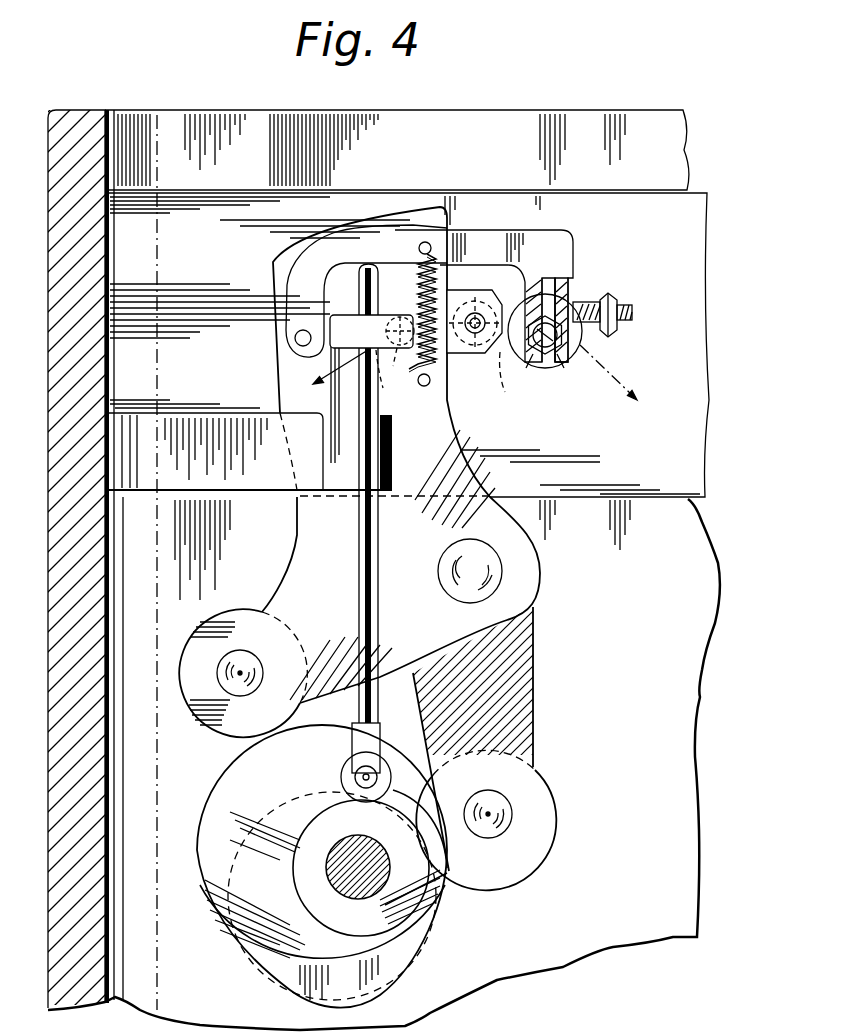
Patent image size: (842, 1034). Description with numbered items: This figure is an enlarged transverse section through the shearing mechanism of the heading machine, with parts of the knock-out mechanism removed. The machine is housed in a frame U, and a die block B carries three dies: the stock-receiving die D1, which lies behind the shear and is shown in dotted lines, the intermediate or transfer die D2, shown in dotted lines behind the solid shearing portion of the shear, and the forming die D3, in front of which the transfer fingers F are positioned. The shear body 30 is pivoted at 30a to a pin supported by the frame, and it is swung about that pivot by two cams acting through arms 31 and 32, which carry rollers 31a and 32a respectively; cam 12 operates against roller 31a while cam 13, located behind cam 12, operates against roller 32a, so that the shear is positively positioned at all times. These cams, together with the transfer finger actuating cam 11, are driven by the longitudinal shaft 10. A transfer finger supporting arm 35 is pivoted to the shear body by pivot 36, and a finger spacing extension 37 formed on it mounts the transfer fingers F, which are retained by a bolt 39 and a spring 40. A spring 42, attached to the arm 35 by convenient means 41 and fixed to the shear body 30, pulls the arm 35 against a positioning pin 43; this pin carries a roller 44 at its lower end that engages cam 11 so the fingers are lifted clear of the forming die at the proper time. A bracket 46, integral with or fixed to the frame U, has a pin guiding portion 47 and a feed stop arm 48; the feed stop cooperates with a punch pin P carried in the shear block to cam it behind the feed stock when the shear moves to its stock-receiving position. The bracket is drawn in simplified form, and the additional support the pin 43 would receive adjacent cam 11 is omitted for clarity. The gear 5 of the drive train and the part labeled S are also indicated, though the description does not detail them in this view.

The frame U is at (90, 289).
The die block B is at (384, 570).
The bracket 46 is at (167, 430).
The lever arm S is at (297, 537).
The pivot 36 is at (295, 342).
The positioning pin 43 is at (367, 545).
The feed stop arm 48 is at (395, 325).
The die D1 is at (394, 376).
The pin guiding portion 47 is at (393, 462).
The driving gear 5 is at (478, 376).
The attaching means 41 is at (433, 243).
The transfer finger supporting arm 35 is at (497, 242).
The transfer fingers F is at (535, 287).
The finger spacing extension 37 is at (565, 289).
The forming die D3 is at (569, 331).
The bolt 39 is at (576, 296).
The spring 40 is at (581, 334).
The spring 42 is at (445, 270).
The punch pin P is at (480, 318).
The transfer die D2 is at (509, 385).
The shear body 30 is at (459, 717).
The pivot 30a is at (476, 566).
The roller 31a is at (182, 655).
The arm 31 is at (254, 668).
The roller 44 is at (343, 773).
The roller 32a is at (520, 858).
The arm 32 is at (488, 799).
The cam 12 is at (322, 866).
The cam 13 is at (322, 942).
The transfer finger actuating cam 11 is at (370, 863).
The longitudinal shaft 10 is at (354, 878).